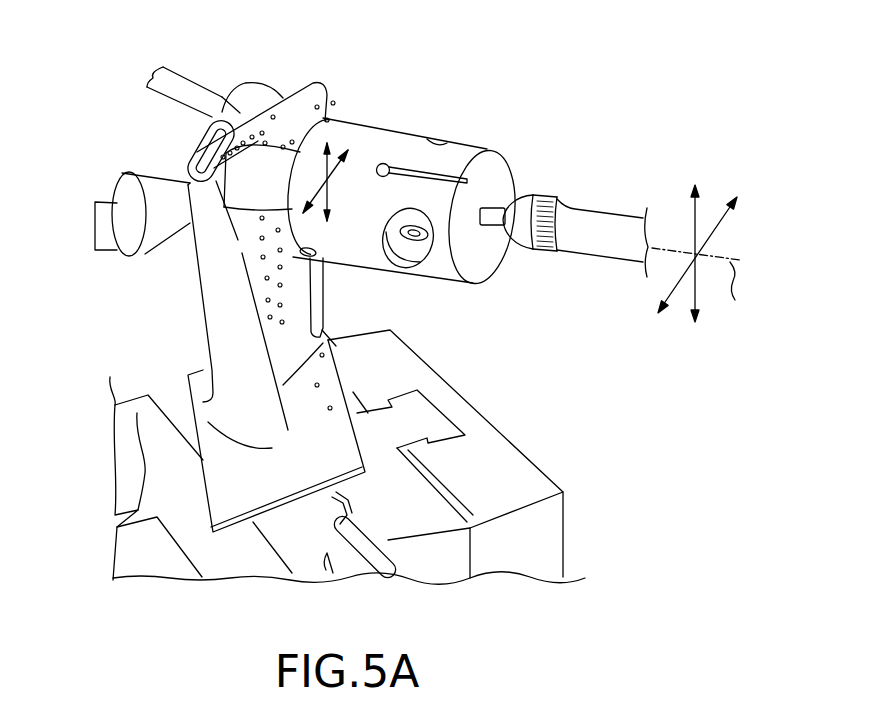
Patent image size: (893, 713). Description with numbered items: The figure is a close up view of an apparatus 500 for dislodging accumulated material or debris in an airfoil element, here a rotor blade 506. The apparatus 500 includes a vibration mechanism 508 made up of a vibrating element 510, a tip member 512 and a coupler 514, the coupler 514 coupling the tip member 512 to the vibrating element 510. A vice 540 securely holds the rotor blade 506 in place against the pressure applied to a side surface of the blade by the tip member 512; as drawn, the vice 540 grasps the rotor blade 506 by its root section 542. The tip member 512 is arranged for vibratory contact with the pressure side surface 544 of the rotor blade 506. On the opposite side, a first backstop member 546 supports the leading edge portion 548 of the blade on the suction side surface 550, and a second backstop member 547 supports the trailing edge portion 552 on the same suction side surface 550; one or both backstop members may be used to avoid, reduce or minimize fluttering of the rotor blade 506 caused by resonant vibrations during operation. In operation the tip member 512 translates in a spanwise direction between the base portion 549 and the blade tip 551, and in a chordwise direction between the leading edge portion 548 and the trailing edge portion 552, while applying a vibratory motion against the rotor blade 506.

The apparatus 500 is at (590, 62).
The rotor blade 506 is at (165, 326).
The vibration mechanism 508 is at (596, 162).
The vibrating element 510 is at (608, 242).
The tip member 512 is at (262, 170).
The coupler 514 is at (337, 125).
The vice 540 is at (388, 497).
The root section 542 is at (300, 527).
The pressure side surface 544 is at (270, 265).
The first backstop member 546 is at (120, 175).
The second backstop member 547 is at (247, 93).
The leading edge portion 548 is at (190, 186).
The base portion 549 is at (293, 372).
The suction side surface 550 is at (190, 150).
The blade tip 551 is at (226, 97).
The trailing edge portion 552 is at (325, 92).